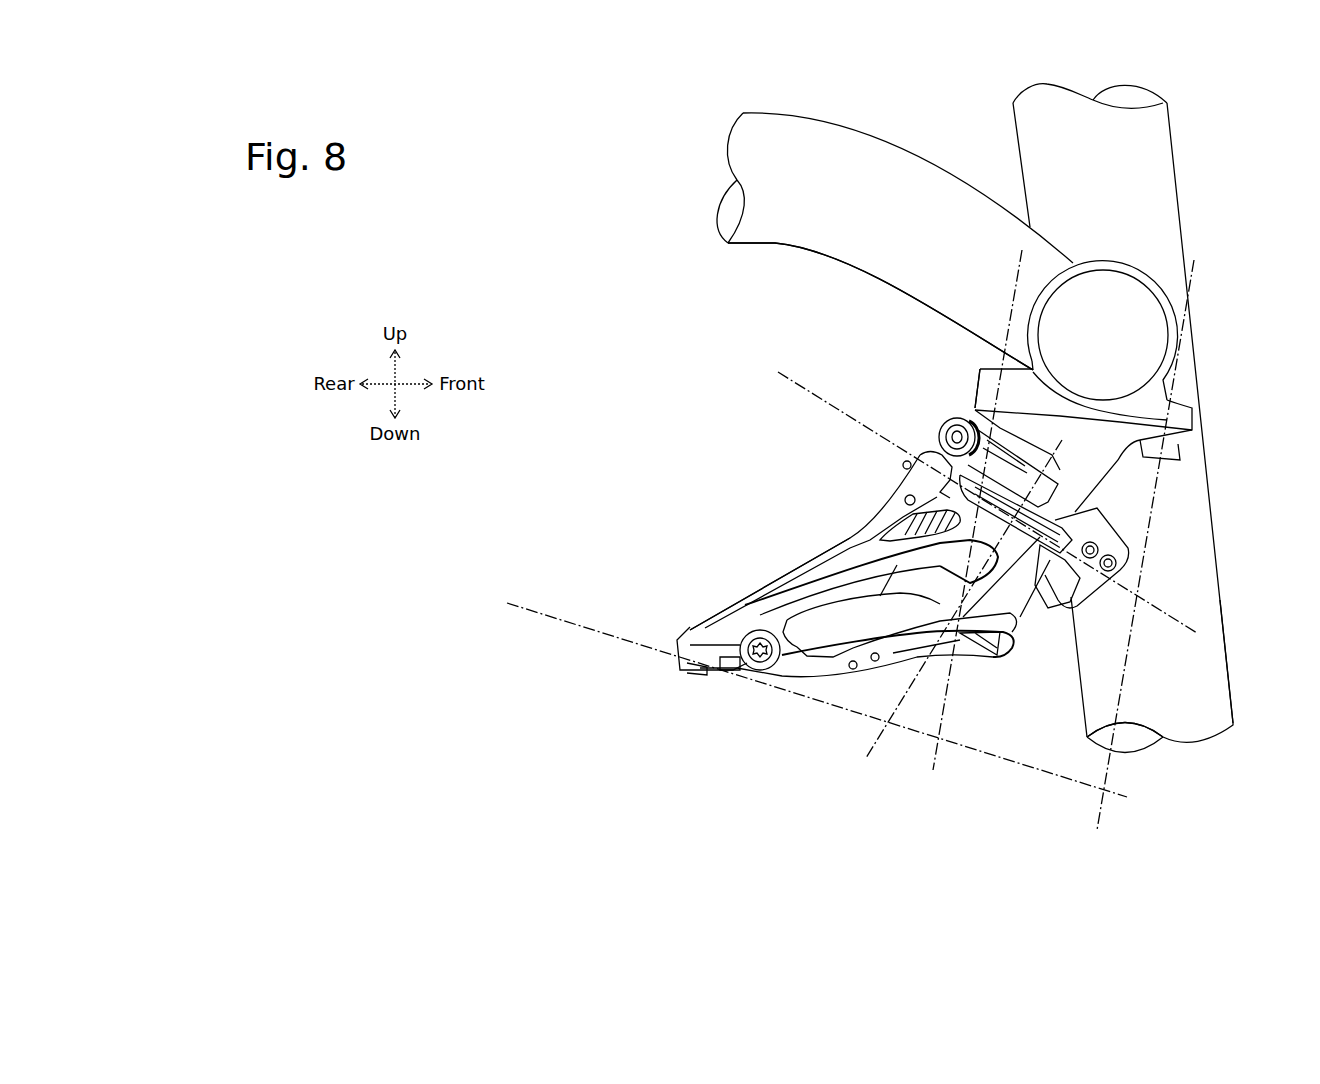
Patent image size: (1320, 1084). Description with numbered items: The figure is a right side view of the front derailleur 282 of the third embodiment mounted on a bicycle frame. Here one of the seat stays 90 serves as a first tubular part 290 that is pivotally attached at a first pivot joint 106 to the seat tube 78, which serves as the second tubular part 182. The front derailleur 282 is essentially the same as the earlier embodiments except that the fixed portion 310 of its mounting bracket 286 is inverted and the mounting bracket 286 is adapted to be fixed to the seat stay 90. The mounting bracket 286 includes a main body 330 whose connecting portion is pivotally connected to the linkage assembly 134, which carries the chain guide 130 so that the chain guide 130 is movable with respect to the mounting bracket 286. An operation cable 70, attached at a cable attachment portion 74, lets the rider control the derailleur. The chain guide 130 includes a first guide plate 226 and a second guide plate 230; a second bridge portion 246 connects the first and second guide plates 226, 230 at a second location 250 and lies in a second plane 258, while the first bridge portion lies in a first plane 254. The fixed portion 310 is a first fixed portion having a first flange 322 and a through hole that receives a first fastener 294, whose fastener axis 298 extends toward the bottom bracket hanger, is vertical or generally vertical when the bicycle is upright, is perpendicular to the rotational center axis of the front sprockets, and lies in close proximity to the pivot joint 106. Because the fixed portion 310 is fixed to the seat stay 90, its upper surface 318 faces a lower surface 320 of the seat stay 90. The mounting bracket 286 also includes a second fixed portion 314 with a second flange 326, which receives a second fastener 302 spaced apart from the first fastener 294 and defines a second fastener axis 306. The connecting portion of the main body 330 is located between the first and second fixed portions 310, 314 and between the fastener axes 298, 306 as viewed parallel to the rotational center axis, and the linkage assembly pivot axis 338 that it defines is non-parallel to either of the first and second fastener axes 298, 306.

The operation cable 70 is at (1069, 449).
The cable attachment portion 74 is at (937, 443).
The seat tube 78 is at (1175, 178).
The seat stay 90 is at (778, 244).
The first pivot joint 106 is at (1122, 290).
The chain guide 130 is at (772, 573).
The linkage assembly 134 is at (1020, 517).
The second tubular part 182 is at (1228, 658).
The first guide plate 226 is at (887, 613).
The second guide plate 230 is at (840, 533).
The second bridge portion 246 is at (722, 678).
The second location 250 is at (653, 631).
The first plane 254 is at (1155, 605).
The second plane 258 is at (975, 752).
The front derailleur 282 is at (633, 378).
The mounting bracket 286 is at (1080, 493).
The first tubular part 290 is at (885, 137).
The fastener 294 is at (973, 422).
The fastener axis 298 is at (1012, 310).
The second fastener 302 is at (1200, 455).
The second fastener axis 306 is at (1132, 644).
The fixed portion 310 is at (1030, 417).
The second fixed portion 314 is at (1137, 433).
The upper surface 318 is at (1070, 420).
The lower surface 320 is at (1092, 424).
The flange 322 is at (975, 400).
The second flange 326 is at (1192, 433).
The main body 330 is at (1058, 584).
The linkage assembly pivot axis 338 is at (877, 735).